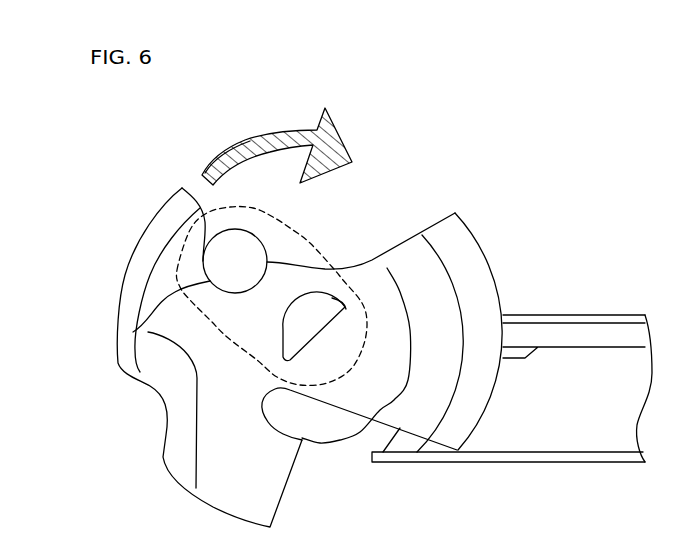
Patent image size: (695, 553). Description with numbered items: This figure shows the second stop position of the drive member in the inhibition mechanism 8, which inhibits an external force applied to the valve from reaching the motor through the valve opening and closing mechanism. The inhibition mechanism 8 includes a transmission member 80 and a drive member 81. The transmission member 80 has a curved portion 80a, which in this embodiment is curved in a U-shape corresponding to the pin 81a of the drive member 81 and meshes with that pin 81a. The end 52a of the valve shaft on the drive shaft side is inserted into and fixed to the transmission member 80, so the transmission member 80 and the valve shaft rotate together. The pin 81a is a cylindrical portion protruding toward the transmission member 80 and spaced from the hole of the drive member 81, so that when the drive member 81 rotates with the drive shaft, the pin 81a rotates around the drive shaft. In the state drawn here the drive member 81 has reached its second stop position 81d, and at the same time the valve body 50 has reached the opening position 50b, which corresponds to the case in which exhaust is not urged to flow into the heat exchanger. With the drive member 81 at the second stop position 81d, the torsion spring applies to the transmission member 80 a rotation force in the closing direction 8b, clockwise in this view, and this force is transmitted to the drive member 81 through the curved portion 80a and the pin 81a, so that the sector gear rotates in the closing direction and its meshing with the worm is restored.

The inhibition mechanism 8 is at (465, 172).
The closing direction 8b is at (337, 130).
The transmission member 80 is at (140, 212).
The curved portion 80a is at (133, 332).
The drive member 81 is at (210, 329).
The pin 81a is at (266, 252).
The second stop position 81d is at (212, 345).
The end of the valve shaft 52a is at (303, 327).
The valve body 50 is at (543, 337).
The opening position 50b is at (581, 315).